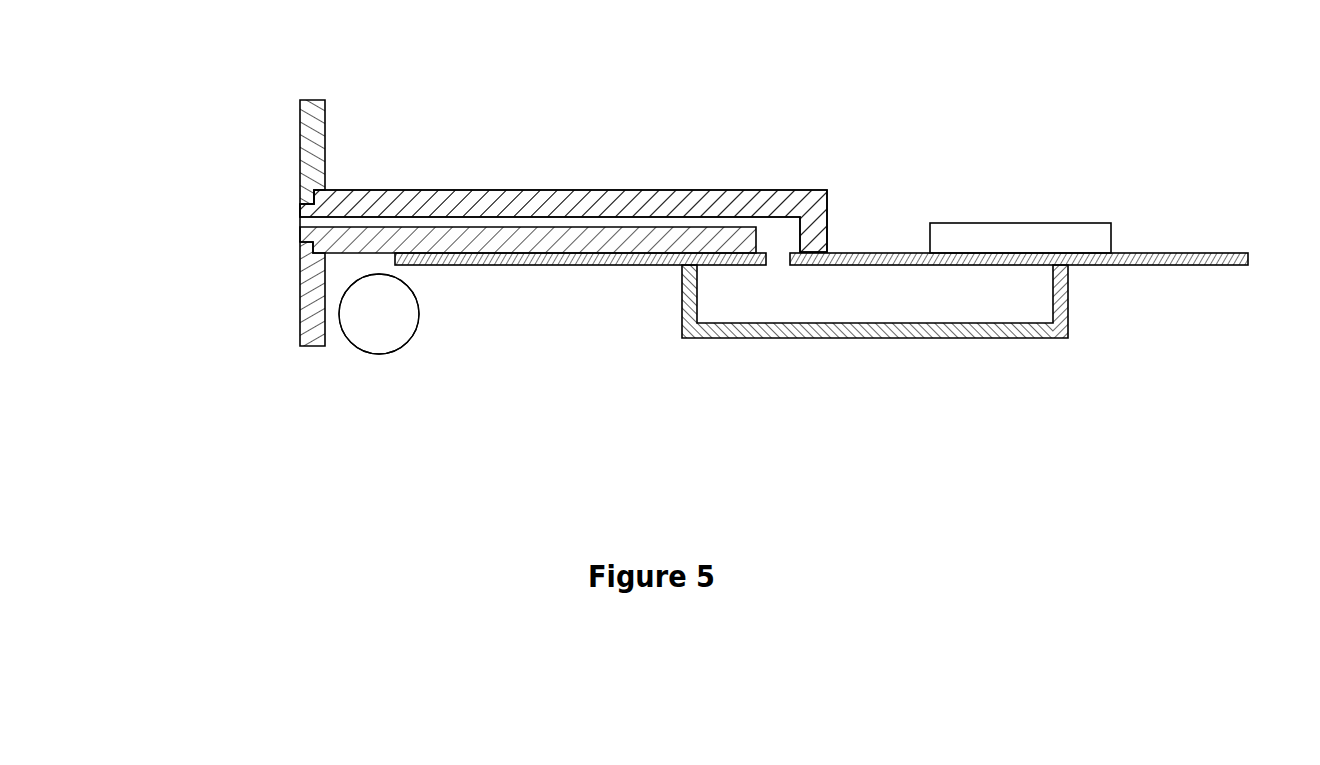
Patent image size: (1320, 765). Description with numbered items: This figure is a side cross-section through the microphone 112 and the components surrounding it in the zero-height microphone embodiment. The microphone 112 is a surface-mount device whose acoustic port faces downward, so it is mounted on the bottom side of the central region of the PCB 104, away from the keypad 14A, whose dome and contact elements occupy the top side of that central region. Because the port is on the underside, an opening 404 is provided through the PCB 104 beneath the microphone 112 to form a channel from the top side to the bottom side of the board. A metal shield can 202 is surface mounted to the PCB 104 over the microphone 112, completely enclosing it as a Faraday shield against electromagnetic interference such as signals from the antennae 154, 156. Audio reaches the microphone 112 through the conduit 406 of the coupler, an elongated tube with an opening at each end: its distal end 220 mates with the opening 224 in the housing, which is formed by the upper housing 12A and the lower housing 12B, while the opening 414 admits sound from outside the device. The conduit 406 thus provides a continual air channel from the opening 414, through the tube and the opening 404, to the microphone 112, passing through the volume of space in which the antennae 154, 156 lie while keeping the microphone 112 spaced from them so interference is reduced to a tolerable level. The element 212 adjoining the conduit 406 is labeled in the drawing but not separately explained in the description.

The upper housing 12A is at (312, 100).
The lower housing 12B is at (311, 343).
The conduit 406 is at (567, 192).
The conduit wall 212 is at (780, 203).
The distal end 220 is at (297, 220).
The opening 414 is at (298, 224).
The opening 224 is at (297, 230).
The antenna 154 is at (402, 304).
The antenna 156 is at (379, 314).
The PCB 104 is at (1181, 253).
The opening 404 is at (778, 258).
The keypad 14A is at (1015, 229).
The shield can 202 is at (1068, 306).
The microphone 112 is at (875, 294).